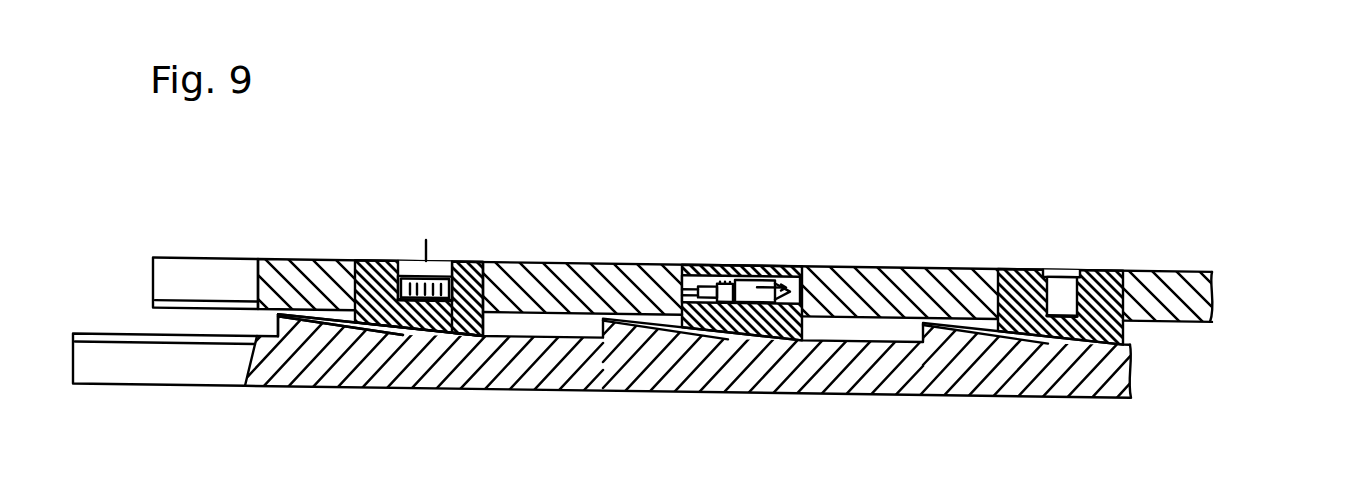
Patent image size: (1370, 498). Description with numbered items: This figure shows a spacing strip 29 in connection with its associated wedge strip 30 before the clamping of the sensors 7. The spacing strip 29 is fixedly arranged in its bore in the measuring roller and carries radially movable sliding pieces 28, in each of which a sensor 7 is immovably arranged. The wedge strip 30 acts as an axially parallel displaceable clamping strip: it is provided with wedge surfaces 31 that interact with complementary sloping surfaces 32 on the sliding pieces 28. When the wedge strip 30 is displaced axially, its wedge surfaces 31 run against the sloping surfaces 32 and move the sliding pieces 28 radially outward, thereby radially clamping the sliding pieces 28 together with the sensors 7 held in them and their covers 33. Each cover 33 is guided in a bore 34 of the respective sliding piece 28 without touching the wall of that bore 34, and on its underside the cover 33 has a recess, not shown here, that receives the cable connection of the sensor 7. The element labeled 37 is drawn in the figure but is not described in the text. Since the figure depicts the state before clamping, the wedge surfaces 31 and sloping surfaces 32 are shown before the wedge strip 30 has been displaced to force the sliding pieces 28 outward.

The sensor 7 is at (434, 282).
The sliding piece 28 is at (380, 278).
The spacing strip 29 is at (1193, 308).
The wedge strip 30 is at (1113, 362).
The wedge surface 31 is at (293, 340).
The sloping surface 32 is at (415, 325).
The cover 33 is at (413, 270).
The bore 34 is at (477, 280).
The guide rail 37 is at (208, 303).